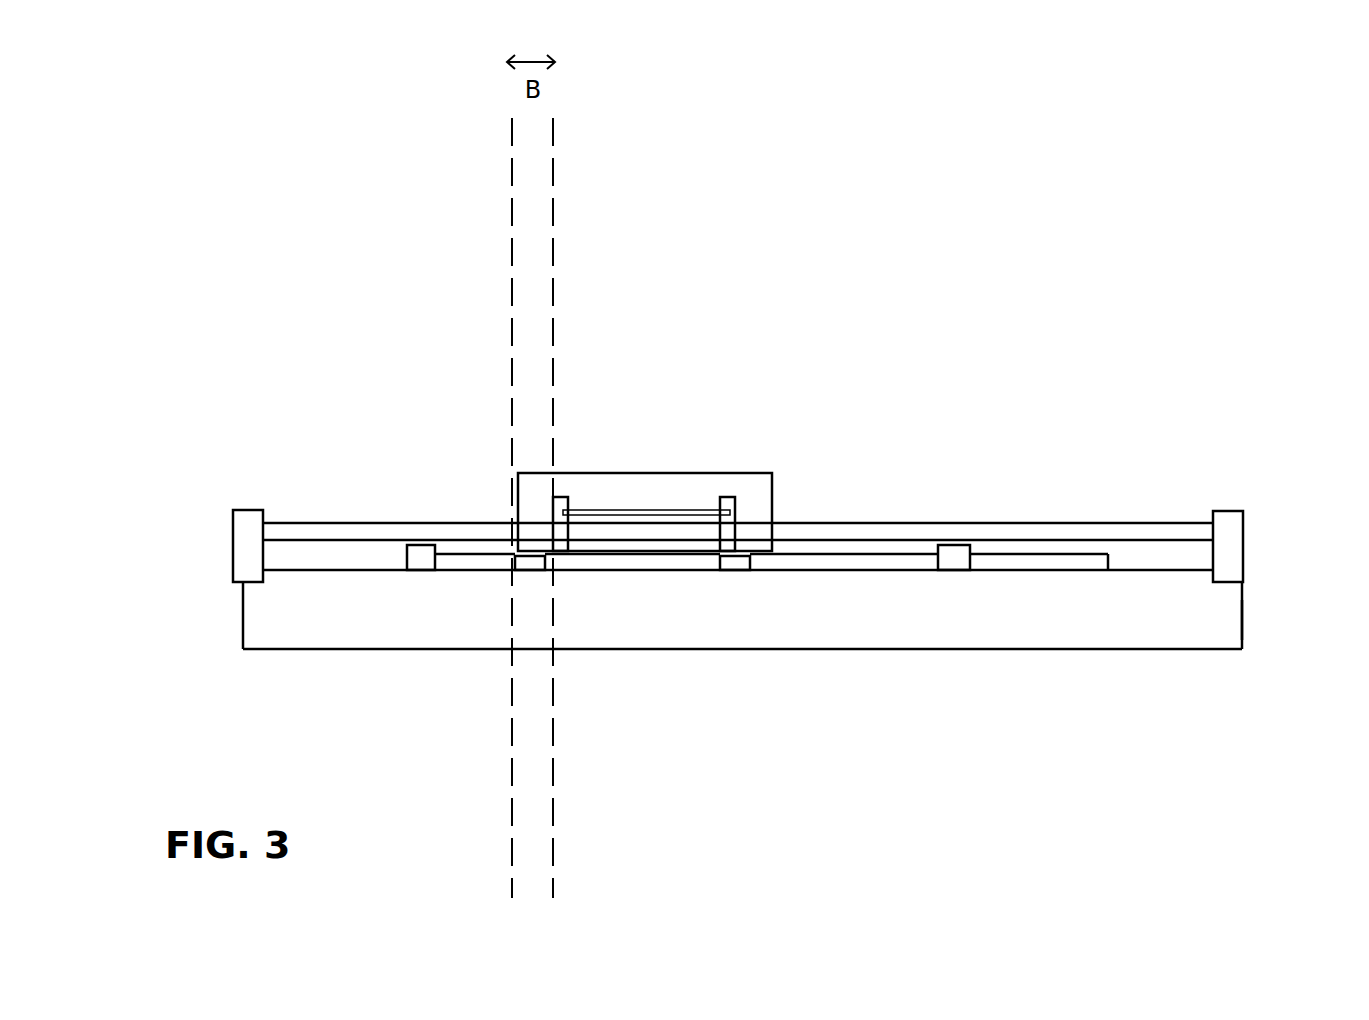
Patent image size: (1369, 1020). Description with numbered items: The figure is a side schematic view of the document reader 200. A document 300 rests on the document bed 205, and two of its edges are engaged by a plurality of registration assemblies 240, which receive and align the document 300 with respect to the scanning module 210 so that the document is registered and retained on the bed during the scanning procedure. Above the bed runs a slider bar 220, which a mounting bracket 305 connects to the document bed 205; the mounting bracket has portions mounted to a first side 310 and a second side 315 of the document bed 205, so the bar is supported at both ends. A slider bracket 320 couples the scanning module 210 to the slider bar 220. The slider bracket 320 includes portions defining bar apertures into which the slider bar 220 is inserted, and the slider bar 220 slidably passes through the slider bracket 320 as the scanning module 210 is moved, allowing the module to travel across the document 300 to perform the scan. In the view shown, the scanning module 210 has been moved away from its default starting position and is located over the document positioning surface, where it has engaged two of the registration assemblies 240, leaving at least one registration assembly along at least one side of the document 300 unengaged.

The document reader 200 is at (1226, 396).
The document bed 205 is at (337, 567).
The scanning module 210 is at (665, 492).
The slider bar 220 is at (1182, 522).
The registration assemblies 240 is at (425, 556).
The document 300 is at (480, 553).
The mounting bracket 305 is at (257, 555).
The first side 310 is at (245, 605).
The second side 315 is at (1242, 613).
The slider bracket 320 is at (737, 520).